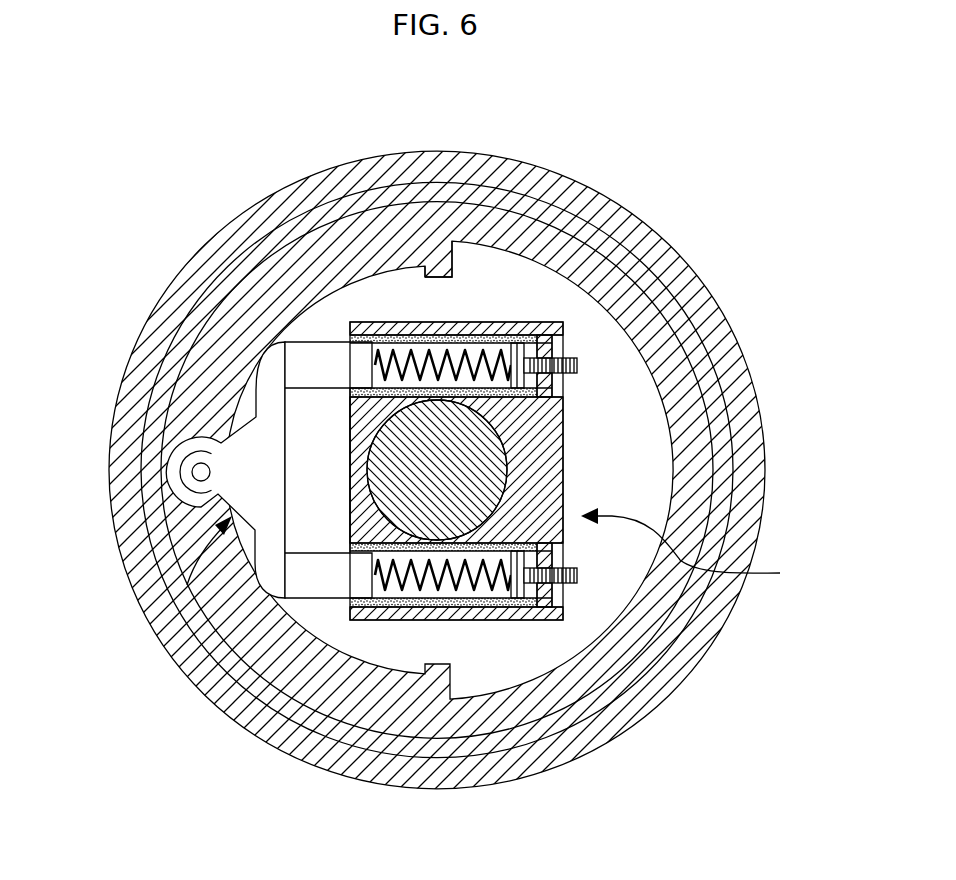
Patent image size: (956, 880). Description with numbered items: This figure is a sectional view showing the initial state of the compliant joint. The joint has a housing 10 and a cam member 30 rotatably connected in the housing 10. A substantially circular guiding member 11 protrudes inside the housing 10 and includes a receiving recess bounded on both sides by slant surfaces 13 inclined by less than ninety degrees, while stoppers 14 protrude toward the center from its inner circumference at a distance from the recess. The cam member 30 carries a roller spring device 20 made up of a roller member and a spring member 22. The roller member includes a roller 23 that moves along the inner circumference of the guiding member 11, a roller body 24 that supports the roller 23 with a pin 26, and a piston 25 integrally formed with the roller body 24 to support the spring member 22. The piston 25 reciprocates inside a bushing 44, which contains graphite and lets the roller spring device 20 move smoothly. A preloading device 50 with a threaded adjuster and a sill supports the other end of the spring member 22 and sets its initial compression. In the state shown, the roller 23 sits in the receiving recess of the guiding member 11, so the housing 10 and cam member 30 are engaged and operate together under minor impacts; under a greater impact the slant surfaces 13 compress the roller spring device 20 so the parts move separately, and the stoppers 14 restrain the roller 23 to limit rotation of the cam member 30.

The housing 10 is at (603, 200).
The guiding member 11 is at (657, 335).
The slant surfaces 13 is at (167, 516).
The stoppers 14 is at (451, 266).
The roller spring device 20 is at (172, 602).
The spring member 22 is at (405, 345).
The roller 23 is at (177, 463).
The roller body 24 is at (260, 388).
The piston 25 is at (316, 357).
The pin 26 is at (201, 470).
The cam member 30 is at (578, 493).
The bushing 44 is at (512, 343).
The preloading device 50 is at (569, 378).